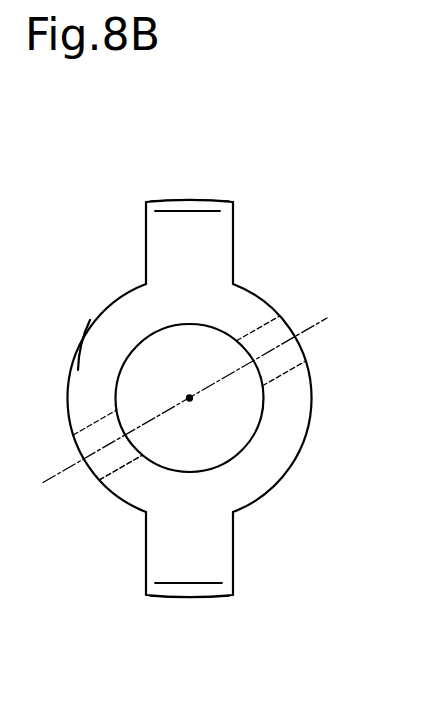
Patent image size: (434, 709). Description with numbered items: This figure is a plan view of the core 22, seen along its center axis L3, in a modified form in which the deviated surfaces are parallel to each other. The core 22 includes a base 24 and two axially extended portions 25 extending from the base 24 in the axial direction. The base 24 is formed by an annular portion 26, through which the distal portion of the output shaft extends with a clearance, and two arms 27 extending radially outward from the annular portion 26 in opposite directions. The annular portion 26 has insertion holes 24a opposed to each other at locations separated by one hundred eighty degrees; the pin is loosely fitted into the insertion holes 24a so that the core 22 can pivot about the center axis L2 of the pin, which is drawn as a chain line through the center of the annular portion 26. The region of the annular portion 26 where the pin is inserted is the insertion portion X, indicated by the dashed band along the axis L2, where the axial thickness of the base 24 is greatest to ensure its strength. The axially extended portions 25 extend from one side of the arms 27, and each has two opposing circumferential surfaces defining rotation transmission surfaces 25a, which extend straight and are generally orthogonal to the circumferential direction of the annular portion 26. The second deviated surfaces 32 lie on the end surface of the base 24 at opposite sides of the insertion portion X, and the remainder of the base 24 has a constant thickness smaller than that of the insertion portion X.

The core 22 is at (354, 183).
The base 24 is at (308, 428).
The insertion holes 24a is at (110, 474).
The axially extended portions 25 is at (187, 200).
The rotation transmission surfaces 25a is at (142, 209).
The annular portion 26 is at (93, 352).
The arms 27 is at (233, 252).
The second deviated surfaces 32 is at (178, 263).
The center axis of the pin L2 is at (326, 318).
The axis of the core L3 is at (190, 401).
The insertion portion X is at (292, 350).